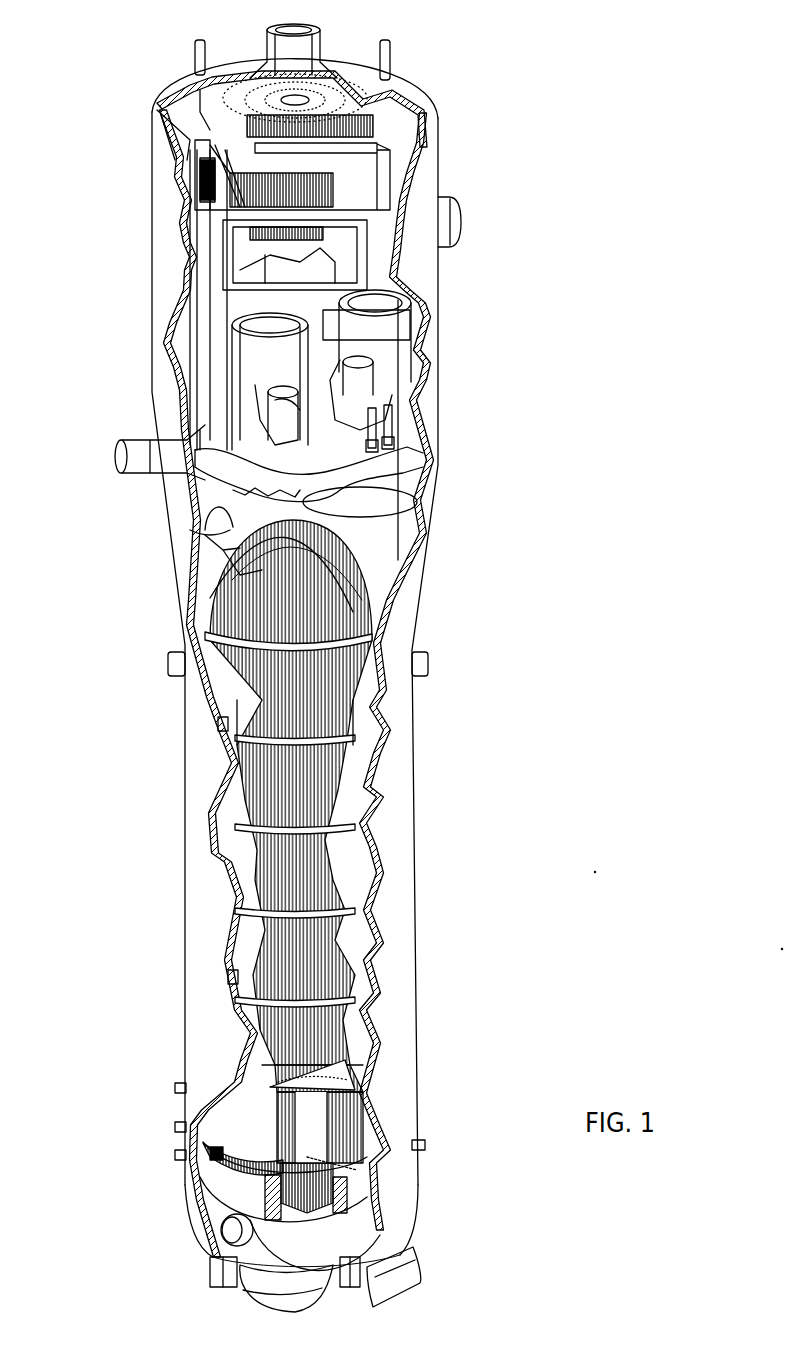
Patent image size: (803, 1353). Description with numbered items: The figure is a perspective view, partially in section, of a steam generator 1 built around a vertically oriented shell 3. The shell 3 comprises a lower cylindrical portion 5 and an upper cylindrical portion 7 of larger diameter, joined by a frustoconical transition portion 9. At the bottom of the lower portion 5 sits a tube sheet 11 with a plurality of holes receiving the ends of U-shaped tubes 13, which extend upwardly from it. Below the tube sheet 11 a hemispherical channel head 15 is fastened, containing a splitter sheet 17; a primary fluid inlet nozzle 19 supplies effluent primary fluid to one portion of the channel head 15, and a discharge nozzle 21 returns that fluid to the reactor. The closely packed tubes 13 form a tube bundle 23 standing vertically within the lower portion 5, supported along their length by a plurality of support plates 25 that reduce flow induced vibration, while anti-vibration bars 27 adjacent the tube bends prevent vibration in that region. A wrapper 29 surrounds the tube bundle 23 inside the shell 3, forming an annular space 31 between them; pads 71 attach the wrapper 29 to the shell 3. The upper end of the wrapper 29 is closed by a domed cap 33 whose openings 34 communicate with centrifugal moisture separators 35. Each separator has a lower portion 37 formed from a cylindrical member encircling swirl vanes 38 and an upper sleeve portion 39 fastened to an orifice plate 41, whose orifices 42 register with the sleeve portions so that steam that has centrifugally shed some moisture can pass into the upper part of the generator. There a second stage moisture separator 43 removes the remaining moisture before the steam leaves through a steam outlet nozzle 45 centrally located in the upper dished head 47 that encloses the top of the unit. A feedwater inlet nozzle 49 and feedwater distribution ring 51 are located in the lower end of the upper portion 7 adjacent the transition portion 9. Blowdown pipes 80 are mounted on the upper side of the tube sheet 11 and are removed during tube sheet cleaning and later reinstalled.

The steam generator 1 is at (190, 900).
The shell 3 is at (195, 961).
The lower cylindrical portion 5 is at (197, 818).
The upper cylindrical portion 7 is at (165, 234).
The frustoconical transition portion 9 is at (177, 570).
The tube sheet 11 is at (218, 1184).
The U-shaped tubes 13 is at (339, 792).
The hemispherical channel head 15 is at (402, 1230).
The splitter sheet 17 is at (313, 1247).
The primary fluid inlet nozzle 19 is at (257, 1295).
The discharge nozzle 21 is at (403, 1282).
The tube bundle 23 is at (343, 840).
The support plates 25 is at (337, 820).
The anti-vibration bars 27 is at (355, 606).
The wrapper 29 is at (250, 1015).
The annular space 31 is at (200, 1124).
The domed cap 33 is at (203, 547).
The openings 34 is at (207, 527).
The centrifugal moisture separators 35 is at (407, 433).
The lower portion 37 is at (243, 417).
The swirl vanes 38 is at (285, 396).
The upper sleeve portion 39 is at (390, 347).
The orifice plate 41 is at (410, 317).
The orifices 42 is at (367, 310).
The second stage moisture separator 43 is at (358, 183).
The steam outlet nozzle 45 is at (323, 60).
The upper dished head 47 is at (417, 97).
The feedwater inlet nozzle 49 is at (135, 475).
The feedwater distribution ring 51 is at (423, 460).
The pads 71 is at (227, 720).
The blowdown pipes 80 is at (373, 1180).